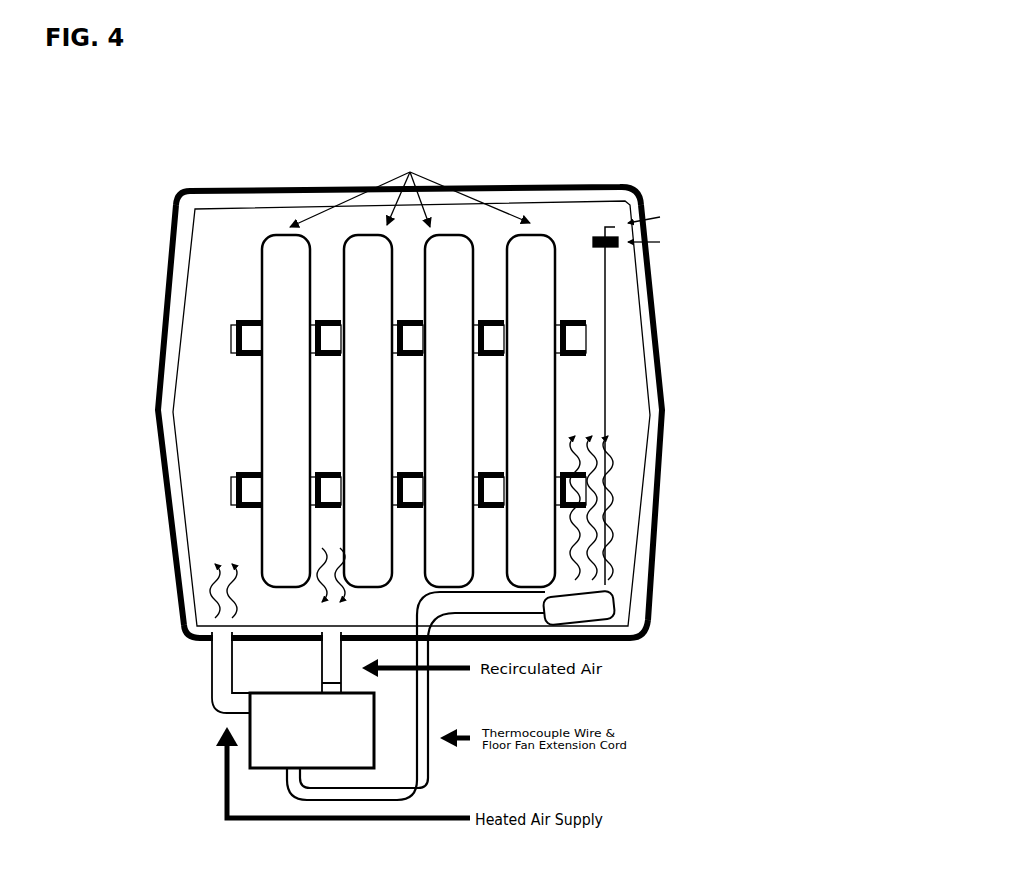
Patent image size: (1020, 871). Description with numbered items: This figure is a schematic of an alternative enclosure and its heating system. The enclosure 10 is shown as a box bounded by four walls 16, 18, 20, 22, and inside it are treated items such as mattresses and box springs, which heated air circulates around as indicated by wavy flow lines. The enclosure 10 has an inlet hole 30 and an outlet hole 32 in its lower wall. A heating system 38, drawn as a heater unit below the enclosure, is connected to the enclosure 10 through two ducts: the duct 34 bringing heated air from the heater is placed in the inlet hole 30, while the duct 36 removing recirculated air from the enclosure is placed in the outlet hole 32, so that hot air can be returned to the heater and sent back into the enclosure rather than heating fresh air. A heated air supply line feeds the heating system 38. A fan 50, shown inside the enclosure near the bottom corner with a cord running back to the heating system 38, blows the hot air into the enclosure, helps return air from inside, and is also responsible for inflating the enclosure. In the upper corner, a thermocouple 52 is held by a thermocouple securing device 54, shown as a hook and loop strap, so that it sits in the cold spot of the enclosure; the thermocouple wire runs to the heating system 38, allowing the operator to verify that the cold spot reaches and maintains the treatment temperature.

The enclosure 10 is at (100, 288).
The wall 16 is at (153, 410).
The wall 18 is at (590, 190).
The wall 20 is at (667, 412).
The wall 22 is at (622, 640).
The inlet hole 30 is at (188, 642).
The outlet hole 32 is at (320, 645).
The duct 34 is at (222, 675).
The duct 36 is at (328, 665).
The heating system 38 is at (250, 755).
The fan 50 is at (620, 602).
The thermocouple 52 is at (623, 225).
The thermocouple securing device 54 is at (618, 243).